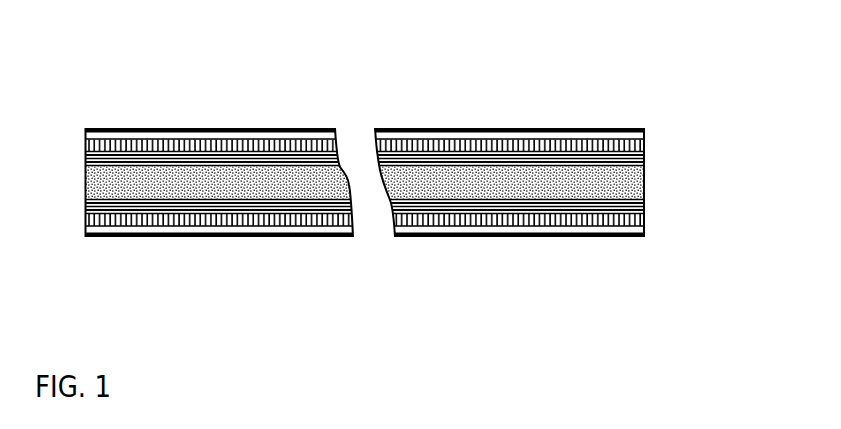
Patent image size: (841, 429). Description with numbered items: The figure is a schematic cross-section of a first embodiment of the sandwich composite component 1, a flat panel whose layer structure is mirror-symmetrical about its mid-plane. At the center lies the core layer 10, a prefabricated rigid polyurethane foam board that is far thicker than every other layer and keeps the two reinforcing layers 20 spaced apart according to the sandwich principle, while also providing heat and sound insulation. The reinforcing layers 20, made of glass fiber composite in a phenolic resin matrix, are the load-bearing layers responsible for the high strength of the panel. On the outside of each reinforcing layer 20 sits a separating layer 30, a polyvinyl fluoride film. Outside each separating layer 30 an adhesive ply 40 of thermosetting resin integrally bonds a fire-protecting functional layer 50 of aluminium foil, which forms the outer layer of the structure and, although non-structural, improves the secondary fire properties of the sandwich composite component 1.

The sandwich composite component 1 is at (646, 32).
The core layer 10 is at (630, 182).
The reinforcing layer 20 is at (644, 158).
The separating layer 30 is at (644, 145).
The adhesive ply 40 is at (644, 136).
The functional layer 50 is at (644, 129).